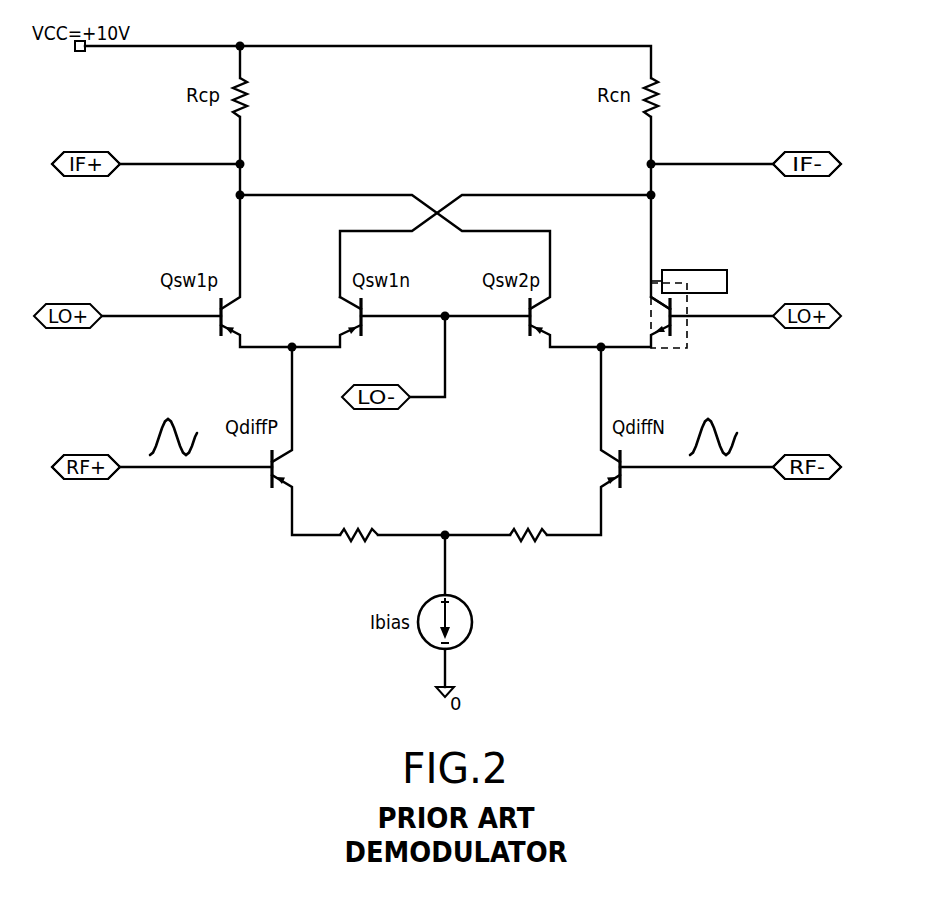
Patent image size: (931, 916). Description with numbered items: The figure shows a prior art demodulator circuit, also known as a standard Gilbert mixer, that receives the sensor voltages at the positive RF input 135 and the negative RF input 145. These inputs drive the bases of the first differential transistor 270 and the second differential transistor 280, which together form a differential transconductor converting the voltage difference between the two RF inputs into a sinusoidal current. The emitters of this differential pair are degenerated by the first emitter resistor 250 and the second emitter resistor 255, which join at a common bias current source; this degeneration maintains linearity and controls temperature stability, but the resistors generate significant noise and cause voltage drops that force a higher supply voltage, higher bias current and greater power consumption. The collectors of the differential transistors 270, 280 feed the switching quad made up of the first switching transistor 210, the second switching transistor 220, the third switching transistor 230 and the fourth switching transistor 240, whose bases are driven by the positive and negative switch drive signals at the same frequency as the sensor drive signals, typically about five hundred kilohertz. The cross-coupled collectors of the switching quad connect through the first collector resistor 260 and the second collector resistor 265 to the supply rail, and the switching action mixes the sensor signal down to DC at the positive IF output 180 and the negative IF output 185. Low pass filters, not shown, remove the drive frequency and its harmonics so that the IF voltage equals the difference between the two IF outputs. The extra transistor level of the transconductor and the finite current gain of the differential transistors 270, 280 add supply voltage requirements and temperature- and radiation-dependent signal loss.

The RF+ input 135 is at (108, 480).
The RF- input 145 is at (785, 480).
The IF+ output 180 is at (108, 178).
The IF- output 185 is at (790, 151).
The switching transistor Qsw1p 210 is at (246, 308).
The switching transistor Qsw1n 220 is at (345, 306).
The switching transistor Qsw2p 230 is at (556, 308).
The switching transistor Qsw2n 240 is at (728, 270).
The emitter resistor Rep 250 is at (346, 548).
The emitter resistor Ren 255 is at (515, 548).
The collector resistor Rcp 260 is at (253, 95).
The collector resistor Rcn 265 is at (660, 96).
The transistor QdiffP 270 is at (300, 460).
The transistor QdiffN 280 is at (590, 458).